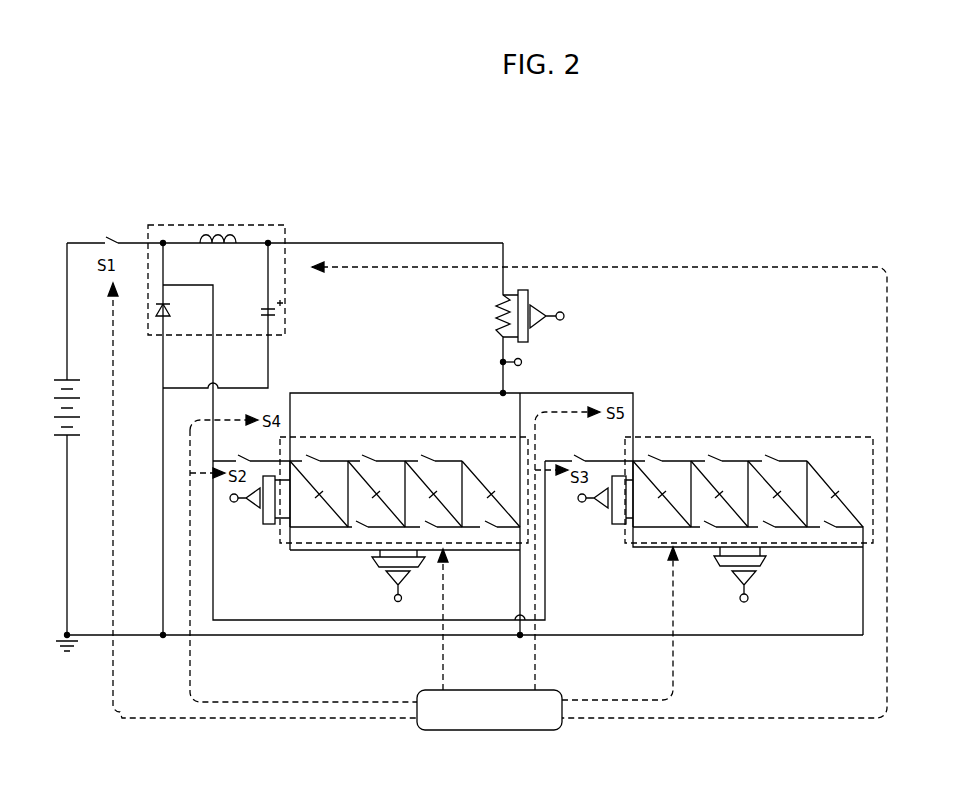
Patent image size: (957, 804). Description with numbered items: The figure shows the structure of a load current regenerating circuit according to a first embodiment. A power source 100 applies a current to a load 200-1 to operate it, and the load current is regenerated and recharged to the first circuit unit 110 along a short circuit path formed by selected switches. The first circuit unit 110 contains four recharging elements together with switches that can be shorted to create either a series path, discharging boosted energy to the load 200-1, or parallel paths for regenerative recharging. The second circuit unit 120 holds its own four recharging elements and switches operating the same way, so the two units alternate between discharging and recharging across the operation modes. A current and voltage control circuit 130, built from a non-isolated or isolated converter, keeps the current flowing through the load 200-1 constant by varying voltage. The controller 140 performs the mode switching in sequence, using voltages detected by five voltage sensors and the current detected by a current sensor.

The power source 100 is at (82, 448).
The first circuit unit 110 is at (398, 437).
The second circuit unit 120 is at (693, 437).
The current and voltage control circuit 130 is at (286, 318).
The controller 140 is at (480, 731).
The load 200-1 is at (497, 306).